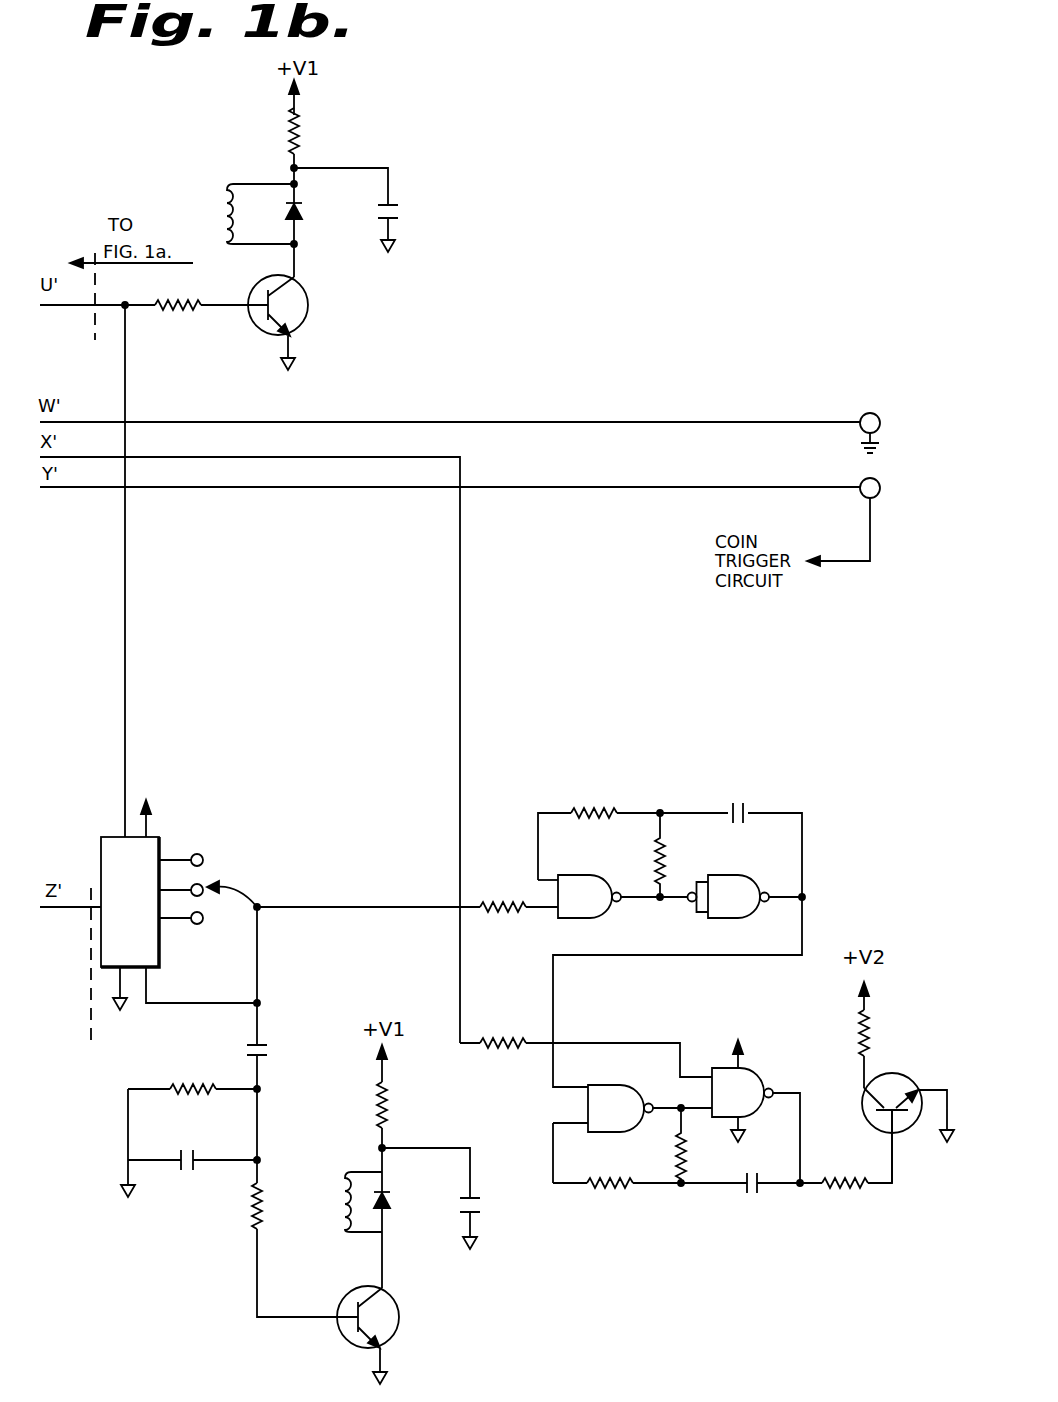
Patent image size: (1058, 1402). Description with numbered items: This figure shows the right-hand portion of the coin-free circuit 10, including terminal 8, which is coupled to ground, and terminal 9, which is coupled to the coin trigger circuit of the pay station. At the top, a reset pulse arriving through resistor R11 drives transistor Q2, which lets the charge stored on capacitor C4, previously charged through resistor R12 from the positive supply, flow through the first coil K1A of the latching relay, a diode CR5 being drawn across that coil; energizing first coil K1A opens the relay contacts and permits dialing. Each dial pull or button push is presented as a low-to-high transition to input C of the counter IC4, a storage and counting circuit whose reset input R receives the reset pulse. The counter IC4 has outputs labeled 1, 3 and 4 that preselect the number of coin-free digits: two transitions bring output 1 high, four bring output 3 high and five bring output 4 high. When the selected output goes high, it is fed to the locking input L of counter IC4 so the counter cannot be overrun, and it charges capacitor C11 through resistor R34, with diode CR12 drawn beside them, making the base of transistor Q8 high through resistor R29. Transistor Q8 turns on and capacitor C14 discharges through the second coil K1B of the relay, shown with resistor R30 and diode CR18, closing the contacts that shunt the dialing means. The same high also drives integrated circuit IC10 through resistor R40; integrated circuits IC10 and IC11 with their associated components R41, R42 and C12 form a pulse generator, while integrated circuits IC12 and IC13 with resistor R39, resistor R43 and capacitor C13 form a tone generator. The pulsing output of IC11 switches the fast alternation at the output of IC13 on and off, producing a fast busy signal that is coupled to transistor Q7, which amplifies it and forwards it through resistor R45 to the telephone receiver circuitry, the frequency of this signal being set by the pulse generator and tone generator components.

The coin-free circuit 10 is at (614, 69).
The terminal 8 is at (870, 433).
The terminal 9 is at (843, 522).
The counter output 1 is at (211, 860).
The counter output 3 is at (212, 901).
The counter output 4 is at (211, 931).
The reset input R is at (122, 806).
The counter input C is at (87, 903).
The locking input L is at (150, 1000).
The resistor R11 is at (170, 325).
The resistor R12 is at (300, 130).
The first coil of relay K1A is at (222, 187).
The capacitor C4 is at (398, 208).
The diode CR5 is at (300, 222).
The transistor Q2 is at (308, 319).
The counter circuit IC4 is at (152, 905).
The capacitor C11 is at (262, 1044).
The resistor R34 is at (206, 1054).
The diode CR12 is at (180, 1157).
The resistor R29 is at (266, 1177).
The resistor R30 is at (388, 1099).
The second coil of relay K1B is at (344, 1184).
The diode CR18 is at (387, 1208).
The capacitor C14 is at (480, 1215).
The transistor Q8 is at (400, 1317).
The resistor R40 is at (497, 900).
The resistor R41 is at (606, 810).
The resistor R42 is at (666, 866).
The capacitor C12 is at (748, 812).
The integrated circuit IC10 is at (579, 896).
The integrated circuit IC11 is at (729, 896).
The resistor R39 is at (487, 1036).
The integrated circuit IC12 is at (603, 1134).
The integrated circuit IC13 is at (742, 1091).
The resistor R43 is at (610, 1190).
The capacitor C13 is at (744, 1196).
The resistor R45 is at (870, 1025).
The transistor Q7 is at (898, 1074).